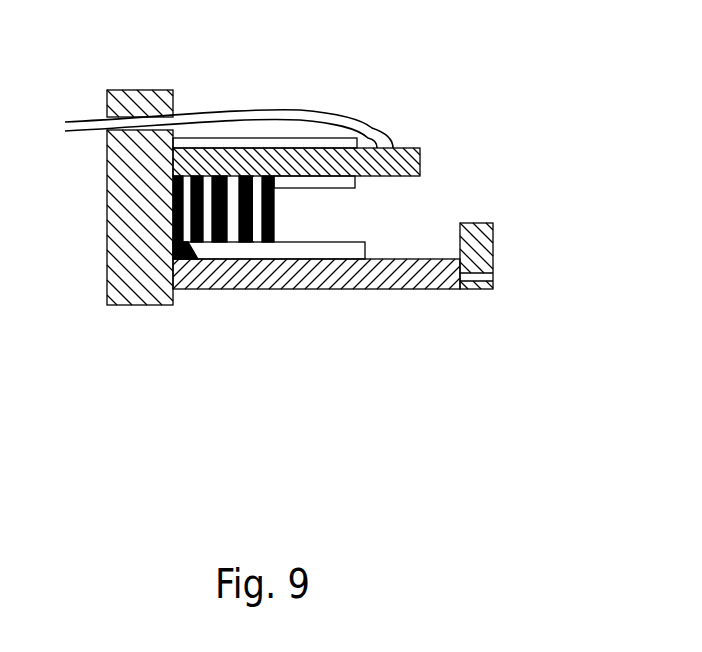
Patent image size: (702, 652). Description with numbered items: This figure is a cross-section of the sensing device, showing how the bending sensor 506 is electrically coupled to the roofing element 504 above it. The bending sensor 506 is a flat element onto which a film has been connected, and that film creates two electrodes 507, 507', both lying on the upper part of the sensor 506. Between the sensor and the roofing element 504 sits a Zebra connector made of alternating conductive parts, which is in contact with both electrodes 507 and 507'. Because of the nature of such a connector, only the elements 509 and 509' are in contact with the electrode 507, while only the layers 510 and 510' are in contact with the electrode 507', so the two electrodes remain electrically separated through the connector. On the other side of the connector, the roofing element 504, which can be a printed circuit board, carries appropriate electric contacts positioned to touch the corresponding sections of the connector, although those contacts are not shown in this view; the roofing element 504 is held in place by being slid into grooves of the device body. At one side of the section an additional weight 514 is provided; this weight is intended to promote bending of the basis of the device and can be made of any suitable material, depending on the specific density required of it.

The roofing element 504 is at (418, 163).
The bending sensor 506 is at (331, 250).
The electrode 507 is at (215, 292).
The electrode 507' is at (278, 282).
The element of Zebra connector 509 is at (177, 277).
The element of Zebra connector 509' is at (219, 132).
The layer of Zebra connector 510 is at (296, 133).
The layer of Zebra connector 510' is at (343, 209).
The additional weight 514 is at (493, 243).